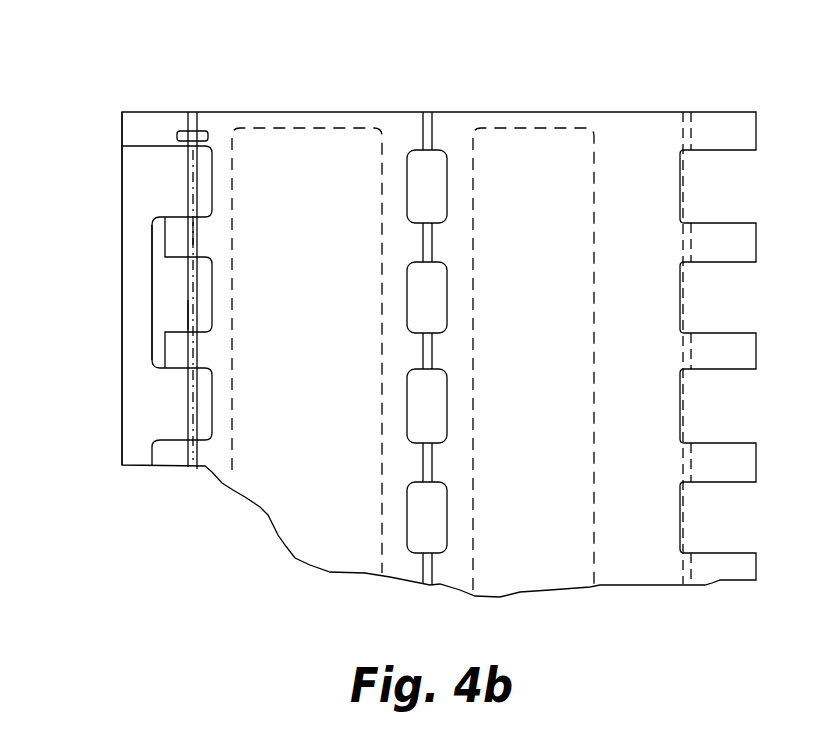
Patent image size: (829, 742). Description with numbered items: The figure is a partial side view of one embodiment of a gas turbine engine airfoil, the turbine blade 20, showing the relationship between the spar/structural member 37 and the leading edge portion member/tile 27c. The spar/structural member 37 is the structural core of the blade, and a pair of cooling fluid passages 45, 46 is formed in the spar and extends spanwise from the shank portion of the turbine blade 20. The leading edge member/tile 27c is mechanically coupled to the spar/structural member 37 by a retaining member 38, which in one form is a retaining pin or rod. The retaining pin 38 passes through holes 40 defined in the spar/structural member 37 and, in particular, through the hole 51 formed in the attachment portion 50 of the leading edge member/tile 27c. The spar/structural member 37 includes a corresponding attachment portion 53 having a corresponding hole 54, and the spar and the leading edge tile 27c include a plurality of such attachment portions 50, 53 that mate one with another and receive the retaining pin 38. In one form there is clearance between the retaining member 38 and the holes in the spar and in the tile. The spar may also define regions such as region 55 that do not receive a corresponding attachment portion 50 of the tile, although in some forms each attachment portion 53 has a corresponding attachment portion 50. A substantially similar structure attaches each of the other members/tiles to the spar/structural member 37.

The turbine blade 20 is at (613, 112).
The spar/structural member 37 is at (307, 118).
The retaining member 38 is at (195, 137).
The hole 40 is at (192, 120).
The cooling fluid passage 45 is at (320, 273).
The cooling fluid passage 46 is at (545, 255).
The leading edge portion member/tile 27c is at (133, 153).
The attachment portion 50 is at (178, 202).
The hole 51 is at (188, 172).
The attachment portion 53 is at (175, 240).
The hole 54 is at (193, 232).
The region 55 is at (168, 303).